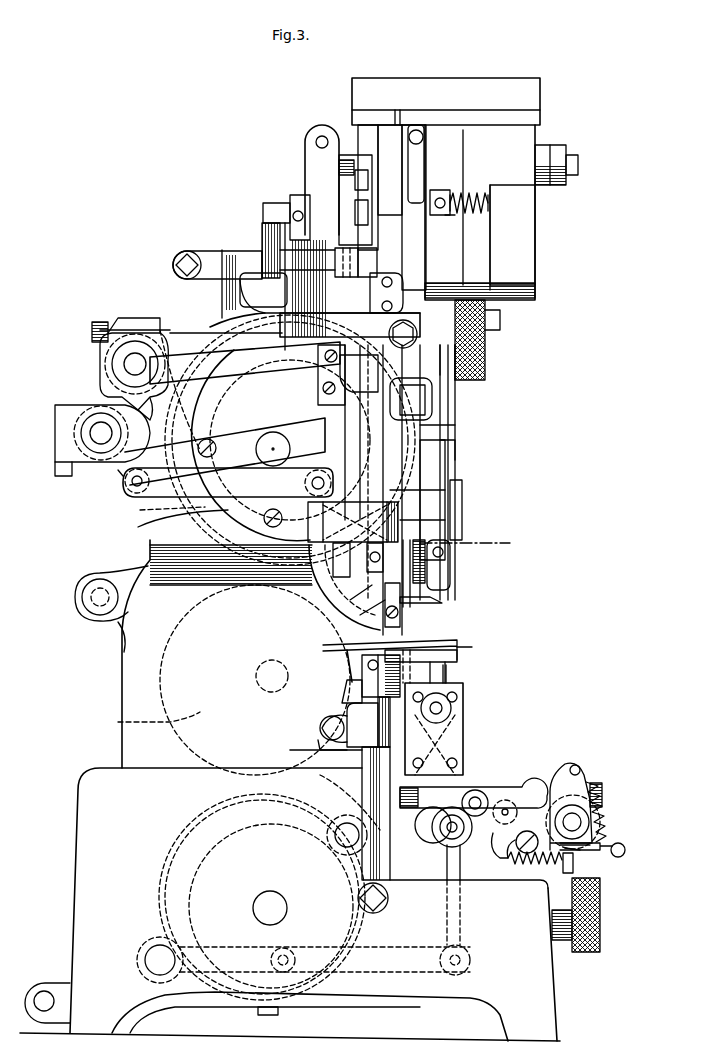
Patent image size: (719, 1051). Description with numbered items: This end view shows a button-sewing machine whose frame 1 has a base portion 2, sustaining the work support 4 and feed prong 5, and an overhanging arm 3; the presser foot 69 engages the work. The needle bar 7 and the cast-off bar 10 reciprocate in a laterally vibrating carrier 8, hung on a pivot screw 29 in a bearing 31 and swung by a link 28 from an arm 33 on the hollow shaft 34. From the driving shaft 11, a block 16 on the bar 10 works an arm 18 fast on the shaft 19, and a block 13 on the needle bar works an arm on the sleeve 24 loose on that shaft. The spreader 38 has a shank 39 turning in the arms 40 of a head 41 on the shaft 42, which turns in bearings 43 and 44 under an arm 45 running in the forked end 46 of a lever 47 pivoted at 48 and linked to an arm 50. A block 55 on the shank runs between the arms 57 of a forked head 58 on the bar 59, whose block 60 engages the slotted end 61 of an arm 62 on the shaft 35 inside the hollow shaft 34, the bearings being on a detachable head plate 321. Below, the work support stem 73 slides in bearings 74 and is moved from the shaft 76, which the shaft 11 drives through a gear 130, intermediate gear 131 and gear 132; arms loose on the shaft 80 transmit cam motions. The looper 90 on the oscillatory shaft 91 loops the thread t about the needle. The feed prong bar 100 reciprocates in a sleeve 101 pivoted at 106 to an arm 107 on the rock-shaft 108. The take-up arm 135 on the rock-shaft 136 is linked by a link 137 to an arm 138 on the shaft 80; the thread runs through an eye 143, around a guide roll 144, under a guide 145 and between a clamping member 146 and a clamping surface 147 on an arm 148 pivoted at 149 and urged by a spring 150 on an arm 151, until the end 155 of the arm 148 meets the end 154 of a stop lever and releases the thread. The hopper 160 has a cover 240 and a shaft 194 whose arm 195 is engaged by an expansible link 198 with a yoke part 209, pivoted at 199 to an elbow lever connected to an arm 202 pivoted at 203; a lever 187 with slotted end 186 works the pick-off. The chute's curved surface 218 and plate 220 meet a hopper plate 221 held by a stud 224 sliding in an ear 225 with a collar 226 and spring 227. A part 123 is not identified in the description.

The machine arm 1 is at (135, 665).
The bed frame 2 is at (78, 877).
The arm head 3 is at (210, 326).
The needle bar 4 is at (353, 650).
The presser bar 5 is at (362, 675).
The slide block 7 is at (445, 430).
The rock lever 8 is at (325, 440).
The guide bar 10 is at (440, 475).
The pivot pin 11 is at (280, 449).
The clamp block 13 is at (432, 408).
The guide plate 16 is at (452, 378).
The pivot stud 18 is at (258, 430).
The shaft 19 is at (95, 436).
The bearing bracket 24 is at (82, 408).
The link 28 is at (255, 488).
The nut 29 is at (395, 338).
The guide 31 is at (440, 362).
The pivot screw 33 is at (120, 478).
The bearing 34 is at (100, 348).
The shaft 35 is at (133, 358).
The thread guide 38 is at (430, 603).
The cam 39 is at (370, 605).
The cam follower 40 is at (385, 615).
The lever 41 is at (360, 590).
The bar 42 is at (425, 492).
The bracket 43 is at (442, 522).
The cross head 44 is at (350, 325).
The clamp 45 is at (380, 272).
The slide 46 is at (345, 250).
The bracket 47 is at (265, 255).
The arm 48 is at (292, 268).
The lever arm 50 is at (245, 252).
The guide block 55 is at (400, 622).
The cam disc 57 is at (345, 575).
The screw 58 is at (305, 545).
The link bar 59 is at (345, 438).
The screw 60 is at (322, 390).
The screw 61 is at (330, 369).
The cam groove 62 is at (214, 368).
The thread guide 69 is at (418, 640).
The thread guide 73 is at (455, 672).
The plate 74 is at (463, 725).
The shaft 76 is at (267, 897).
The shaft 80 is at (153, 950).
The guide 90 is at (445, 663).
The link 91 is at (332, 790).
The feed bar 100 is at (372, 862).
The presser foot 101 is at (350, 692).
The pivot 106 is at (325, 724).
The foot 107 is at (320, 742).
The pin 108 is at (335, 841).
The knob 123 is at (600, 948).
The dashed line 130 is at (158, 510).
The line 131 is at (143, 721).
The wheel 132 is at (178, 862).
The lever 135 is at (500, 790).
The ratchet wheel 136 is at (580, 822).
The rod 137 is at (448, 860).
The link 138 is at (402, 972).
The roller 143 is at (412, 812).
The stud 144 is at (451, 708).
The pin 145 is at (478, 790).
The pawl 146 is at (582, 850).
The pin 147 is at (575, 848).
The plate 148 is at (543, 850).
The spring 149 is at (508, 860).
The ratchet 150 is at (595, 805).
The pawl lever 151 is at (560, 790).
The teeth 154 is at (604, 838).
The rod 155 is at (625, 851).
The housing 160 is at (510, 145).
The bar 186 is at (450, 515).
The bracket 187 is at (448, 435).
The bracket 194 is at (345, 155).
The lug 195 is at (308, 170).
The pin 198 is at (295, 212).
The block 199 is at (263, 210).
The fillet 202 is at (118, 628).
The lug 203 is at (100, 580).
The clamp 209 is at (292, 200).
The rod 218 is at (400, 237).
The block 220 is at (362, 218).
The block 221 is at (368, 182).
The block 224 is at (445, 190).
The wall 225 is at (490, 230).
The pin 226 is at (452, 215).
The spring 227 is at (475, 192).
The top plate 240 is at (480, 88).
The line 321 is at (168, 524).
The thread t is at (457, 678).